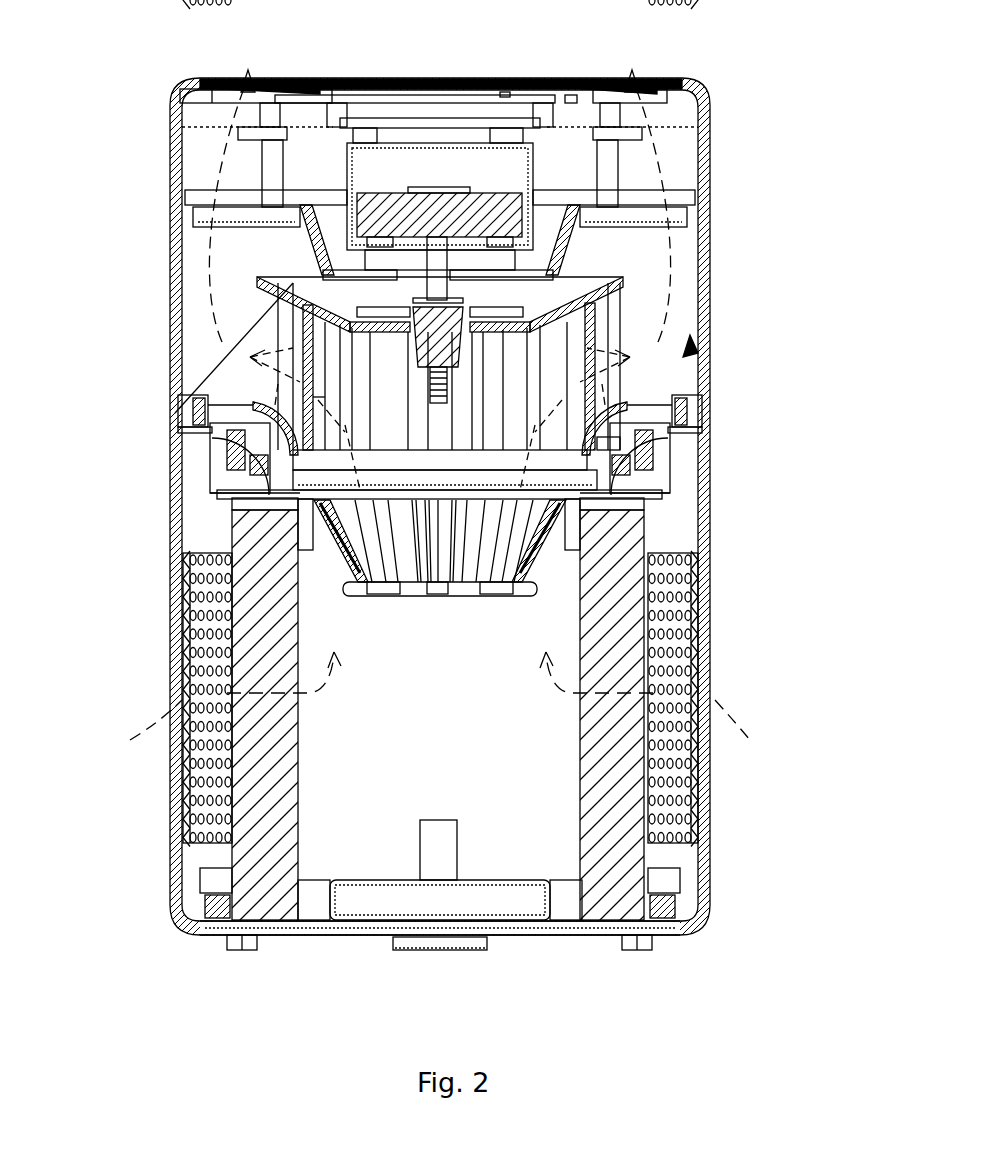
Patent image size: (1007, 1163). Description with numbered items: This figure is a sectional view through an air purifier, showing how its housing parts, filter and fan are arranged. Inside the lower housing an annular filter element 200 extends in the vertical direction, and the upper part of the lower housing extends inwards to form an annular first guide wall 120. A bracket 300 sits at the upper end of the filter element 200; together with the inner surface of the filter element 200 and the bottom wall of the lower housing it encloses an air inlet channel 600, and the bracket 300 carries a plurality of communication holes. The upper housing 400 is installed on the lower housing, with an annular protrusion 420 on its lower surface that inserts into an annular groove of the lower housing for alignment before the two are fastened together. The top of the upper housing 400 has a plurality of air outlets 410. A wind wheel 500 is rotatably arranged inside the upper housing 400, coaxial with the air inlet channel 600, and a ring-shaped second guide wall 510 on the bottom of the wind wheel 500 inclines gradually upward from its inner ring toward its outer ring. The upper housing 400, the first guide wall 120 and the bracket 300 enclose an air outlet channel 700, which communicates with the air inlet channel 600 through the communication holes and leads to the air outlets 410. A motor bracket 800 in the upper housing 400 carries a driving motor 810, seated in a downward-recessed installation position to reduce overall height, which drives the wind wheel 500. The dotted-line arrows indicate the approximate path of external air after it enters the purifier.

The first guide wall 120 is at (653, 495).
The filter element 200 is at (622, 795).
The bracket 300 is at (333, 543).
The upper housing 400 is at (706, 150).
The air outlets 410 is at (266, 88).
The annular protrusion 420 is at (627, 430).
The wind wheel 500 is at (175, 413).
The second guide wall 510 is at (702, 640).
The air inlet channel 600 is at (410, 765).
The air outlet channel 700 is at (697, 358).
The motor bracket 800 is at (288, 207).
The driving motor 810 is at (453, 220).